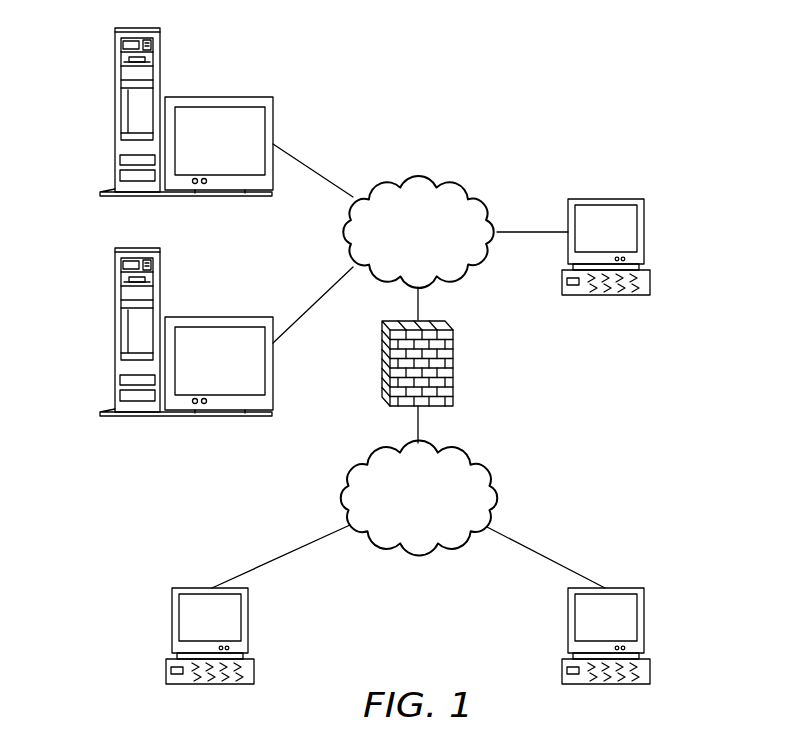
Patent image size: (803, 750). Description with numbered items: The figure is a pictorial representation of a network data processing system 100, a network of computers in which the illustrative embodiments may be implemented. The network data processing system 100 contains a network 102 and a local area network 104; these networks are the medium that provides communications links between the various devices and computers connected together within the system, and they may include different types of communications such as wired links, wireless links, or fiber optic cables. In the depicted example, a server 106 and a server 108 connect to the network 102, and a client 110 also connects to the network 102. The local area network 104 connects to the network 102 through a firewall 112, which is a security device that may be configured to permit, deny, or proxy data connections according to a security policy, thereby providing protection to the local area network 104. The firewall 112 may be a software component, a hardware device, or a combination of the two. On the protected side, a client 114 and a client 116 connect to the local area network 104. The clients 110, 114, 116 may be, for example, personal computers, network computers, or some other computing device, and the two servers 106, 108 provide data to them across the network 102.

The network data processing system 100 is at (556, 97).
The network 102 is at (388, 179).
The local area network 104 is at (387, 552).
The server 106 is at (115, 110).
The server 108 is at (115, 330).
The client 110 is at (645, 232).
The firewall 112 is at (453, 366).
The client 114 is at (645, 617).
The client 116 is at (172, 620).